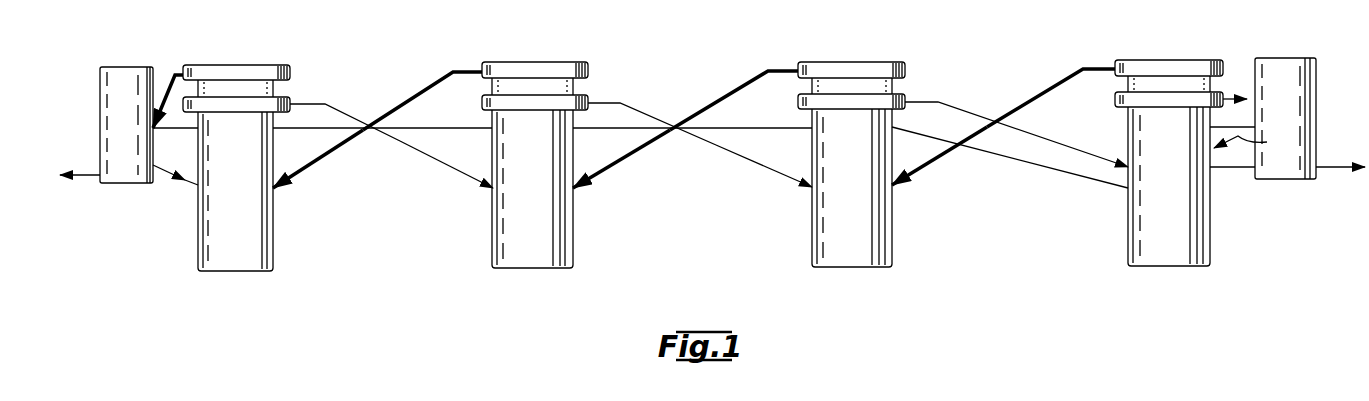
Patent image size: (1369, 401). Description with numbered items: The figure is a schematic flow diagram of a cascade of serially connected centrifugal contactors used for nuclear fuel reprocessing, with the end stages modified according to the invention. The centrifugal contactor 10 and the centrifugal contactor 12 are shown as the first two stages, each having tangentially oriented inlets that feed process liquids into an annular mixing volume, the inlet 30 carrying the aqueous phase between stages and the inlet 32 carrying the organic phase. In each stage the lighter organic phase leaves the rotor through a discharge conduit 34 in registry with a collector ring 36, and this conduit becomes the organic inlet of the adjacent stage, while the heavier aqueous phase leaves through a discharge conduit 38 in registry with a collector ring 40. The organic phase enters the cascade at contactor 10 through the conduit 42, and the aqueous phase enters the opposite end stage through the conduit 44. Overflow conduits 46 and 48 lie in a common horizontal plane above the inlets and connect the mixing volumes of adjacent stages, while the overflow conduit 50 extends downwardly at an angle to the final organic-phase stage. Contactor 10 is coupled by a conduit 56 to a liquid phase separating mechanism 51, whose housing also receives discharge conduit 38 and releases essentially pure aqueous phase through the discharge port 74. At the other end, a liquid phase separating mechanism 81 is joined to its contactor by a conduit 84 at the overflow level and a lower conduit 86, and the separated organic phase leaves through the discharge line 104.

The centrifugal contactor 10 is at (240, 223).
The centrifugal contactor 12 is at (540, 225).
The inlet 30 is at (339, 150).
The inlet 32 is at (442, 163).
The discharge conduit 34 is at (318, 104).
The collector ring 36 is at (234, 113).
The discharge conduit 38 is at (173, 75).
The collector ring 40 is at (245, 65).
The conduit 42 is at (166, 172).
The conduit 44 is at (1254, 139).
The overflow conduit 46 is at (440, 127).
The overflow conduit 48 is at (760, 127).
The overflow conduit 50 is at (1057, 171).
The liquid phase separating mechanism 51 is at (124, 64).
The conduit 56 is at (172, 130).
The discharge port 74 is at (86, 180).
The liquid phase separating mechanism 81 is at (1298, 58).
The conduit 84 is at (1238, 127).
The conduit 86 is at (1232, 170).
The discharge line 104 is at (1336, 170).